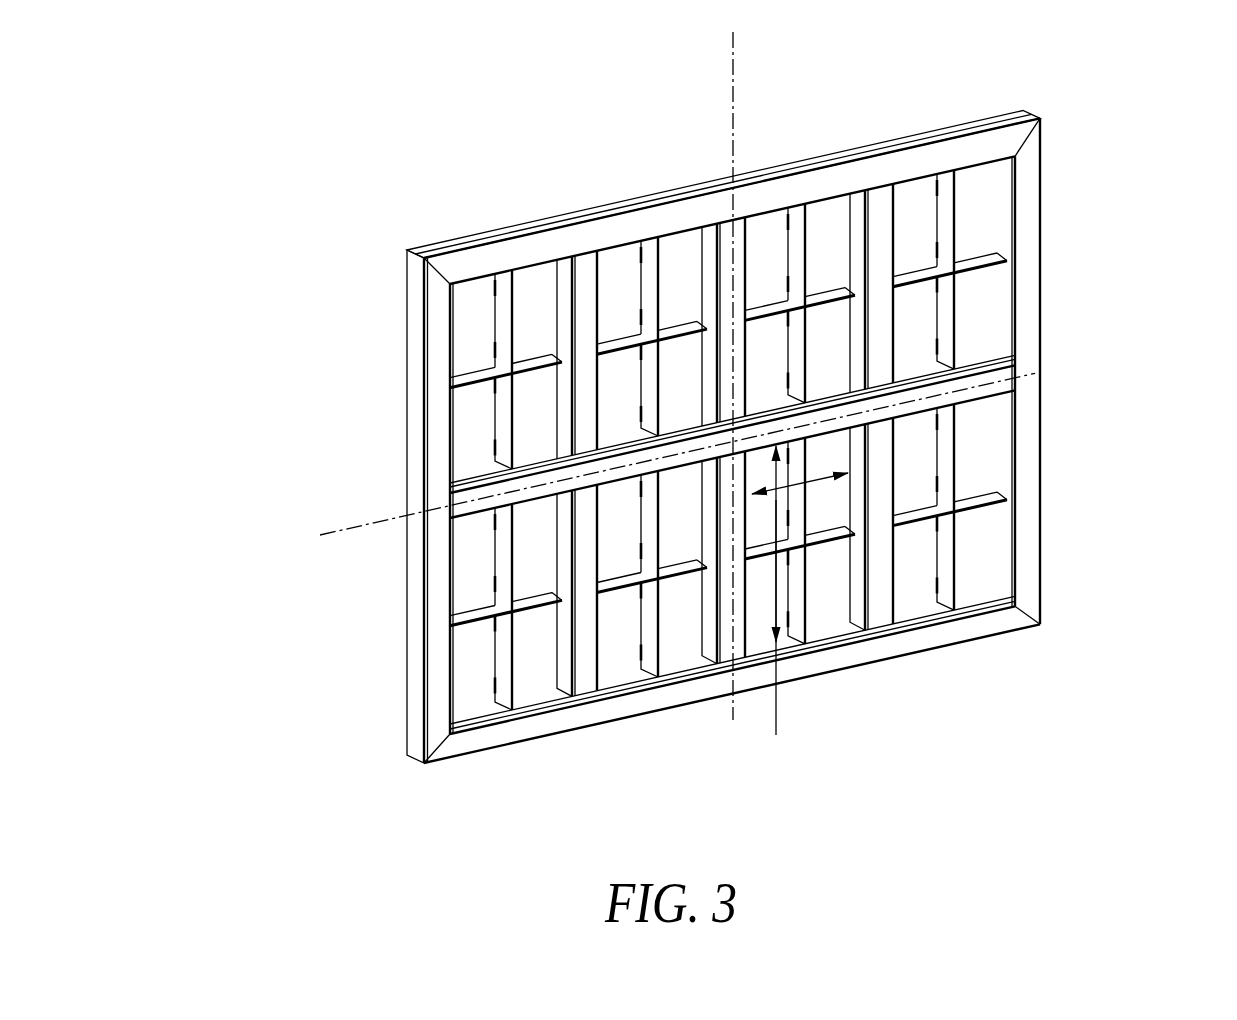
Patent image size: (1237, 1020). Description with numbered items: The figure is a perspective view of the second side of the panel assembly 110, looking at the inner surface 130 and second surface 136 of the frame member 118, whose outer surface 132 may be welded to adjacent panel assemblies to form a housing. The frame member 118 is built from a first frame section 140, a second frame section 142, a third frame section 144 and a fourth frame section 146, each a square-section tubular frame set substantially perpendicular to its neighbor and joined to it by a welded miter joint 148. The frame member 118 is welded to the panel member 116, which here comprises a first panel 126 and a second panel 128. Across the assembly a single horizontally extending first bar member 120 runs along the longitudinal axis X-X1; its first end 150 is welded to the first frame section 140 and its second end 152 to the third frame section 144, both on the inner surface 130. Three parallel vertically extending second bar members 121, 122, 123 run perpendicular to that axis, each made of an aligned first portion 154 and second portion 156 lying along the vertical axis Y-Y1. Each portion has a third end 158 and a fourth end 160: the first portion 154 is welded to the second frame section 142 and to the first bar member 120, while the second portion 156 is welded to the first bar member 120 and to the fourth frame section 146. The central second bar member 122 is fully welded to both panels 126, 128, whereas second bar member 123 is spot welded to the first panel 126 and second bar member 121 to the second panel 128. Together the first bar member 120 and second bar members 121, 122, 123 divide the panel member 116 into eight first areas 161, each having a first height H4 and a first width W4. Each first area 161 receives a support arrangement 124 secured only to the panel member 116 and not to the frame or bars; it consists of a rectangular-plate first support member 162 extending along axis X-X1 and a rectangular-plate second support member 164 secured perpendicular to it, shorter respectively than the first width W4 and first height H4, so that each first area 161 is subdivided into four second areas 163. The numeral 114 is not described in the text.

The panel assembly 110 is at (705, 400).
The upper right receptacle 114 is at (976, 216).
The panel member 116 is at (916, 603).
The frame member 118 is at (1053, 238).
The first bar member 120 is at (691, 415).
The second bar member 121 is at (585, 268).
The second bar member 122 is at (742, 224).
The second bar member 123 is at (877, 198).
The support arrangement 124 is at (486, 681).
The first panel 126 is at (827, 616).
The second panel 128 is at (613, 659).
The inner surface 130 is at (1018, 174).
The outer surface 132 is at (416, 296).
The second surface 136 is at (1028, 507).
The first frame section 140 is at (1040, 182).
The second frame section 142 is at (930, 160).
The third frame section 144 is at (413, 273).
The fourth frame section 146 is at (811, 667).
The miter joint 148 is at (1034, 608).
The first end 150 is at (1020, 367).
The second end 152 is at (448, 496).
The first portion 154 is at (879, 326).
The second portion 156 is at (882, 590).
The third end 158 is at (718, 212).
The fourth end 160 is at (881, 407).
The first area 161 is at (823, 218).
The first support member 162 is at (468, 618).
The second area 163 is at (631, 262).
The second support member 164 is at (497, 644).
The first height H4 is at (773, 601).
The first width W4 is at (850, 480).
The longitudinal axis X-X1 is at (352, 521).
The vertical axis Y-Y1 is at (739, 361).